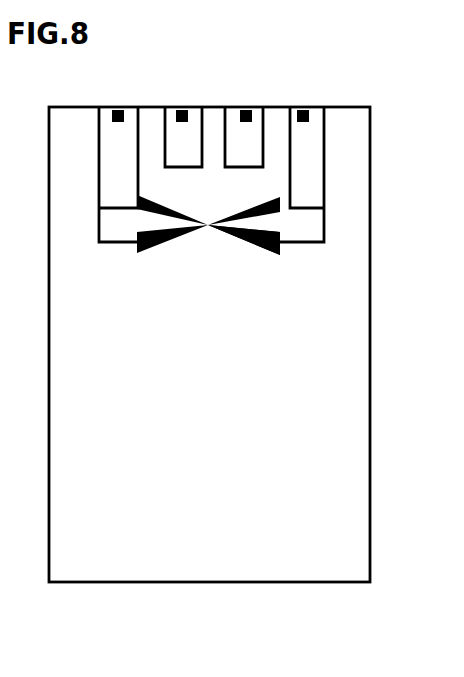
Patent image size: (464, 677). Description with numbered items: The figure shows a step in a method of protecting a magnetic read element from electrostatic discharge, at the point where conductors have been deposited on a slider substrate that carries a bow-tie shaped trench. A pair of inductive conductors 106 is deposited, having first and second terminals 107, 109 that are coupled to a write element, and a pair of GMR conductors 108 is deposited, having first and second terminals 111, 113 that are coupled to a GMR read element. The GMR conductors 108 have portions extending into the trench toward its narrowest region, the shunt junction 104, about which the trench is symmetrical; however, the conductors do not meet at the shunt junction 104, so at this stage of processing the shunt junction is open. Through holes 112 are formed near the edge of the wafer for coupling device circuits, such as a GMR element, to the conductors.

The shunt junction 104 is at (210, 216).
The inductive conductors 106 is at (232, 120).
The first terminal 107 is at (176, 150).
The GMR conductors 108 is at (107, 155).
The second terminal 109 is at (247, 152).
The first terminal 111 is at (168, 241).
The through holes 112 is at (304, 110).
The second terminal 113 is at (277, 259).